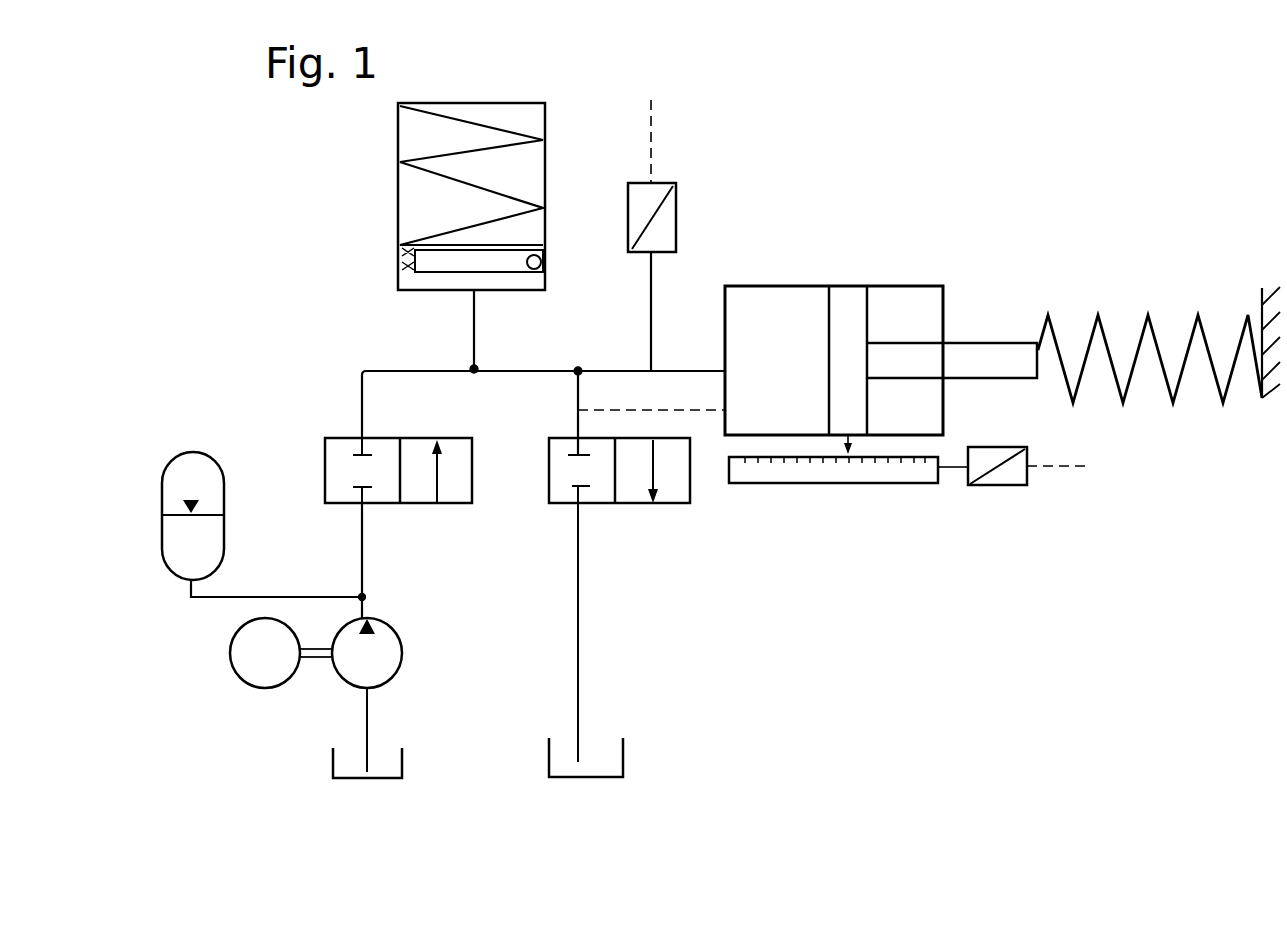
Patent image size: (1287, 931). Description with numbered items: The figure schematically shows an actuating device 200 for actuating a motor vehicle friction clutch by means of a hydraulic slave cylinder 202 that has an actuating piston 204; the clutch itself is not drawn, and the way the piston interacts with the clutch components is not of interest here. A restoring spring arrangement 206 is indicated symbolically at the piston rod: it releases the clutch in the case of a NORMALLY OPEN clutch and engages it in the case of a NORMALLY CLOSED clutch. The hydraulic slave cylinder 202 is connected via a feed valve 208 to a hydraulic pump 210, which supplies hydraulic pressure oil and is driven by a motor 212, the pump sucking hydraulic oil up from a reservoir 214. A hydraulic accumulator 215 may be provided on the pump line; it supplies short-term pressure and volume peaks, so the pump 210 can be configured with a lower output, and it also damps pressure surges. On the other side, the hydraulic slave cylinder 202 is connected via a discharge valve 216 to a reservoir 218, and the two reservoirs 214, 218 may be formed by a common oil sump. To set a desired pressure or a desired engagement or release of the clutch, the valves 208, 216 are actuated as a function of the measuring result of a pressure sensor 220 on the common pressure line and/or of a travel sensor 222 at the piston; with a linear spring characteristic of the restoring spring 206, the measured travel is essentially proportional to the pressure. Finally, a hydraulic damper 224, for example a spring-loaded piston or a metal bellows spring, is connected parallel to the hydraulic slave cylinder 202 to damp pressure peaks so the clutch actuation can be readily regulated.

The actuator arrangement 200 is at (848, 188).
The hydraulic slave cylinder 202 is at (779, 286).
The actuating piston 204 is at (857, 308).
The restoring spring arrangement 206 is at (1152, 322).
The feed valve 208 is at (429, 485).
The hydraulic pump 210 is at (395, 660).
The motor 212 is at (283, 672).
The reservoir 214 is at (395, 765).
The hydraulic accumulator 215 is at (225, 549).
The discharge valve 216 is at (643, 495).
The reservoir 218 is at (612, 758).
The pressure sensor 220 is at (632, 252).
The travel sensor 222 is at (925, 483).
The hydraulic damper 224 is at (418, 222).